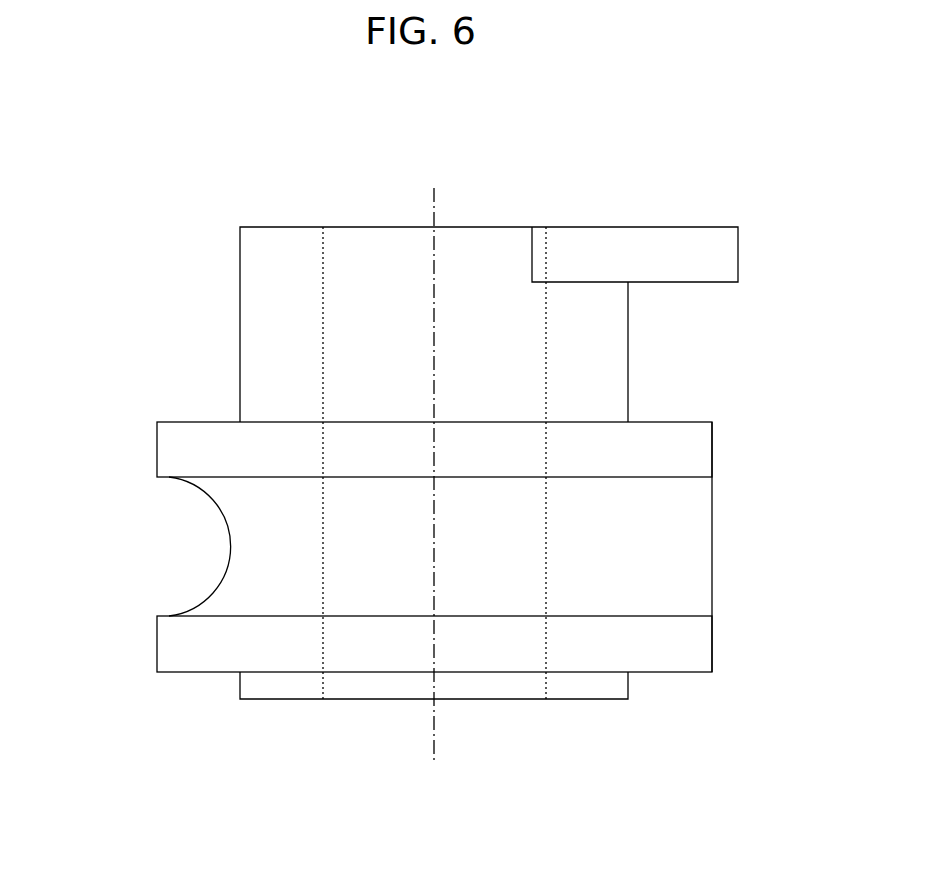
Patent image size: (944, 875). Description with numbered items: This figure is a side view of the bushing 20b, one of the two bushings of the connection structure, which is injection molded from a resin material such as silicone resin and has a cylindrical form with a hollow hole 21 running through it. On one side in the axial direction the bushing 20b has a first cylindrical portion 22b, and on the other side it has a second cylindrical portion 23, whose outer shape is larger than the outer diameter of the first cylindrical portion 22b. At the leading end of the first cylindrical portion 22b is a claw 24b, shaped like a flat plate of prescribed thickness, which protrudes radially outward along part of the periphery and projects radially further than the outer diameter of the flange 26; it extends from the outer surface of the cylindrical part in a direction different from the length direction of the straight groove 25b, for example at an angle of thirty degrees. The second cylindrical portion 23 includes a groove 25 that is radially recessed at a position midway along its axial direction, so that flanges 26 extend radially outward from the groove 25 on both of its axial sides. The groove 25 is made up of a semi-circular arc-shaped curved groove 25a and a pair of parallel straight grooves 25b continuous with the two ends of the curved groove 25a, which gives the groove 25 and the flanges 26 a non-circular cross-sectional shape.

The bushing 20b is at (449, 456).
The hollow hole 21 is at (325, 262).
The first cylindrical portion 22b is at (645, 352).
The second cylindrical portion 23 is at (730, 445).
The claw 24b is at (738, 253).
The groove 25 is at (141, 546).
The curved groove 25a is at (218, 572).
The straight groove 25b is at (585, 595).
The flange 26 is at (157, 445).